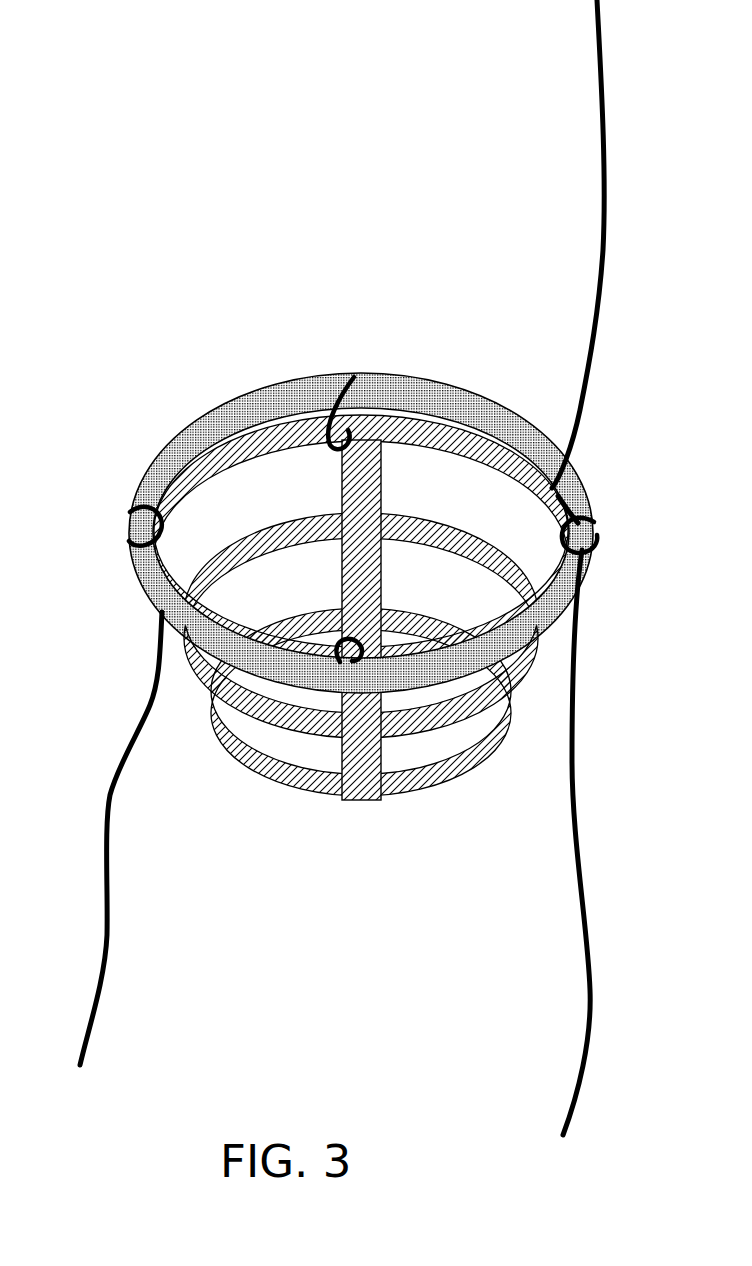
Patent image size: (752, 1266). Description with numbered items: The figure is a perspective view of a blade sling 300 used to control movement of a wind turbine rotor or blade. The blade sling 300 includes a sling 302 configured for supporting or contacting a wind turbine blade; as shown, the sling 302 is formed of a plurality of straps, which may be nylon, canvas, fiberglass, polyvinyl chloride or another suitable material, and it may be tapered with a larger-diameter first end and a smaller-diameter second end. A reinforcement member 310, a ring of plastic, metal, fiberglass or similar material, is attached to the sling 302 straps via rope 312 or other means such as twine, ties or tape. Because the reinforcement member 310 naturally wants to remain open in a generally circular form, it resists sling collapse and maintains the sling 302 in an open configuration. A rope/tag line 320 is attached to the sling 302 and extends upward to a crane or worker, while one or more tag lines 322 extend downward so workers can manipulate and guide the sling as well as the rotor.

The blade sling 300 is at (172, 227).
The sling 302 is at (334, 800).
The reinforcement member 310 is at (445, 398).
The rope 312 is at (332, 405).
The rope/tag line 320 is at (598, 147).
The tag lines 322 is at (108, 936).